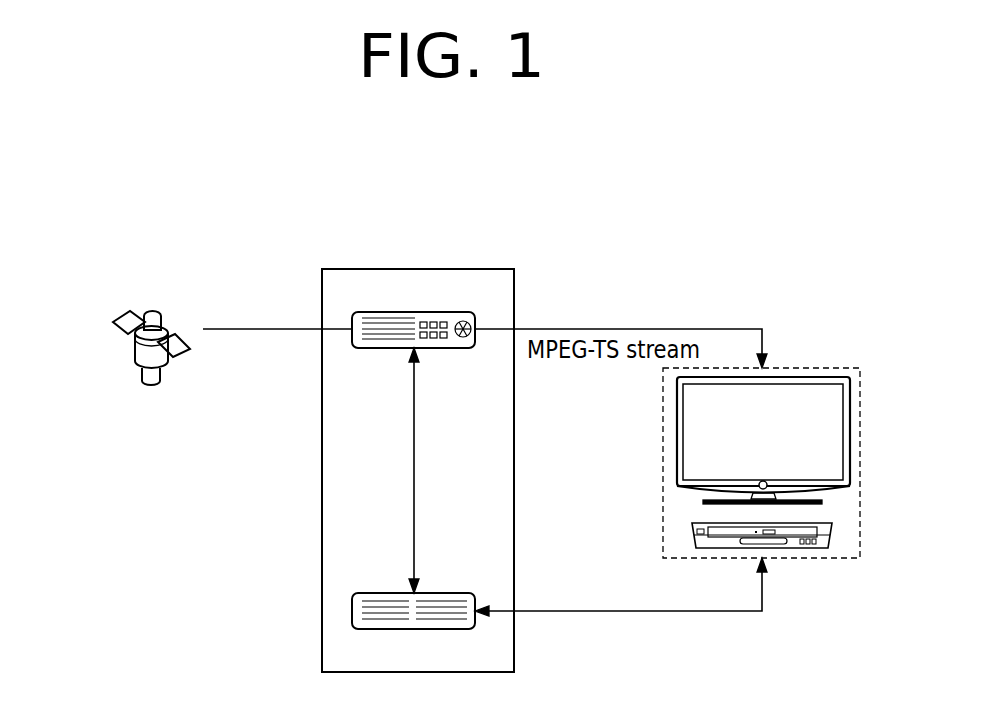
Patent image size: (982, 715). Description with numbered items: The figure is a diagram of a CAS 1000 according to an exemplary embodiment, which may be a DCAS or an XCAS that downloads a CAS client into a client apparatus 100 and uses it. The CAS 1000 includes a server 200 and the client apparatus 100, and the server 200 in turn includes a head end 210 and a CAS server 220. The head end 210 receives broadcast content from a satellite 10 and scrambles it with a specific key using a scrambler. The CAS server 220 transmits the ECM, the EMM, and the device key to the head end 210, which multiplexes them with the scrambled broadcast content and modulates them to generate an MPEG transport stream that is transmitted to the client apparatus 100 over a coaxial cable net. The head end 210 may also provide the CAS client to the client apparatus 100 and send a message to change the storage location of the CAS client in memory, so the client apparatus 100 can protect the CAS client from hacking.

The CAS 1000 is at (516, 148).
The satellite 10 is at (135, 352).
The client apparatus 100 is at (823, 367).
The server 200 is at (476, 268).
The head end 210 is at (373, 350).
The CAS server 220 is at (370, 590).